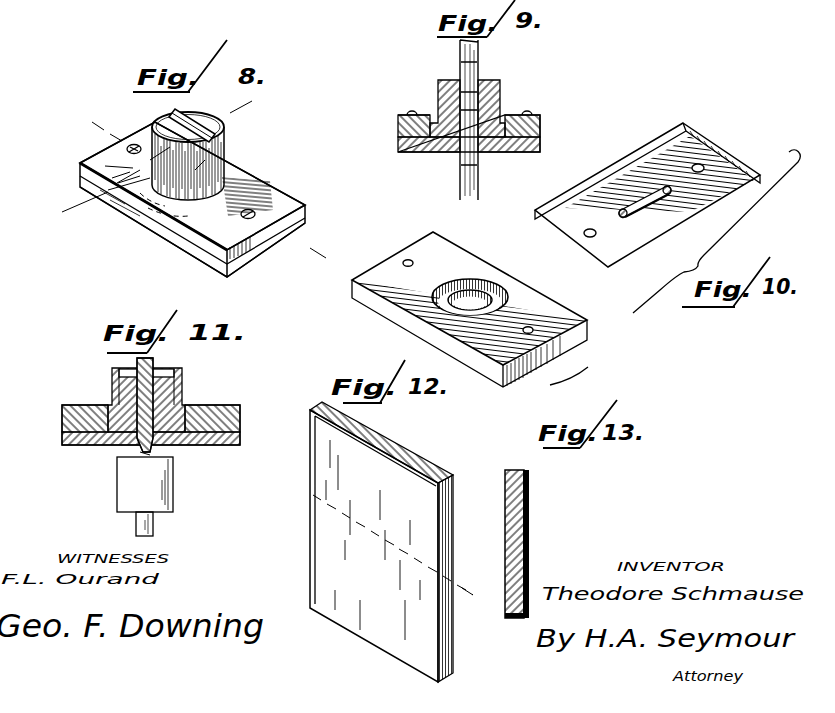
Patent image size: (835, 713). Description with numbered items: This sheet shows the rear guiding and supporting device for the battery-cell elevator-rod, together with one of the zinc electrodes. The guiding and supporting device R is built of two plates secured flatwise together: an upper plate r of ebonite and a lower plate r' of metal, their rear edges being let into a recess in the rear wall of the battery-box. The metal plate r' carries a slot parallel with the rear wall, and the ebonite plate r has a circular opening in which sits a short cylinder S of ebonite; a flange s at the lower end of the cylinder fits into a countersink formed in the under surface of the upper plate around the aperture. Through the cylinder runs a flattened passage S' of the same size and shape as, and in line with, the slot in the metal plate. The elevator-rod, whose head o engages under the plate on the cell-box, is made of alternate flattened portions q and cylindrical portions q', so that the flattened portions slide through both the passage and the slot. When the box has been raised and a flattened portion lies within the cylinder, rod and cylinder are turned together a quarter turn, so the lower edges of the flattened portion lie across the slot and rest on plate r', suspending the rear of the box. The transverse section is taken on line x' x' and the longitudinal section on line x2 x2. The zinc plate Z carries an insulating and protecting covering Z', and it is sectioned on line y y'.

In FIG. 8, the guiding and supporting device R is at (192, 199).
In FIG. 9, the guiding and supporting device R is at (542, 133).
In FIG. 11, the guiding and supporting device R is at (137, 425).
In FIG. 8, the upper plate r is at (195, 186).
In FIG. 9, the upper plate r is at (456, 126).
In FIG. 10, the upper plate r is at (469, 309).
In FIG. 11, the upper plate r is at (157, 418).
In FIG. 8, the lower plate r' is at (206, 226).
In FIG. 9, the lower plate r' is at (455, 143).
In FIG. 10, the lower plate r' is at (647, 195).
In FIG. 11, the lower plate r' is at (160, 437).
In FIG. 8, the short cylinder S is at (188, 145).
In FIG. 9, the short cylinder S is at (476, 104).
In FIG. 11, the short cylinder S is at (157, 397).
In FIG. 8, the flattened passage S' is at (213, 125).
In FIG. 8, the flange s is at (241, 214).
In FIG. 9, the flange s is at (505, 115).
In FIG. 11, the flange s is at (186, 405).
In FIG. 8, the section line x' x' is at (162, 158).
In FIG. 8, the section line x2 x2 is at (205, 189).
In FIG. 11, the flattened portions q is at (156, 435).
In FIG. 11, the cylindrical portions q' is at (176, 459).
In FIG. 11, the head o is at (153, 535).
In FIG. 12, the zinc plate Z is at (381, 542).
In FIG. 13, the zinc plate Z is at (496, 544).
In FIG. 12, the insulating and protecting covering Z' is at (448, 565).
In FIG. 13, the insulating and protecting covering Z' is at (531, 544).
In FIG. 12, the section line y' y is at (367, 531).
In FIG. 12, the section line y' y' is at (474, 601).